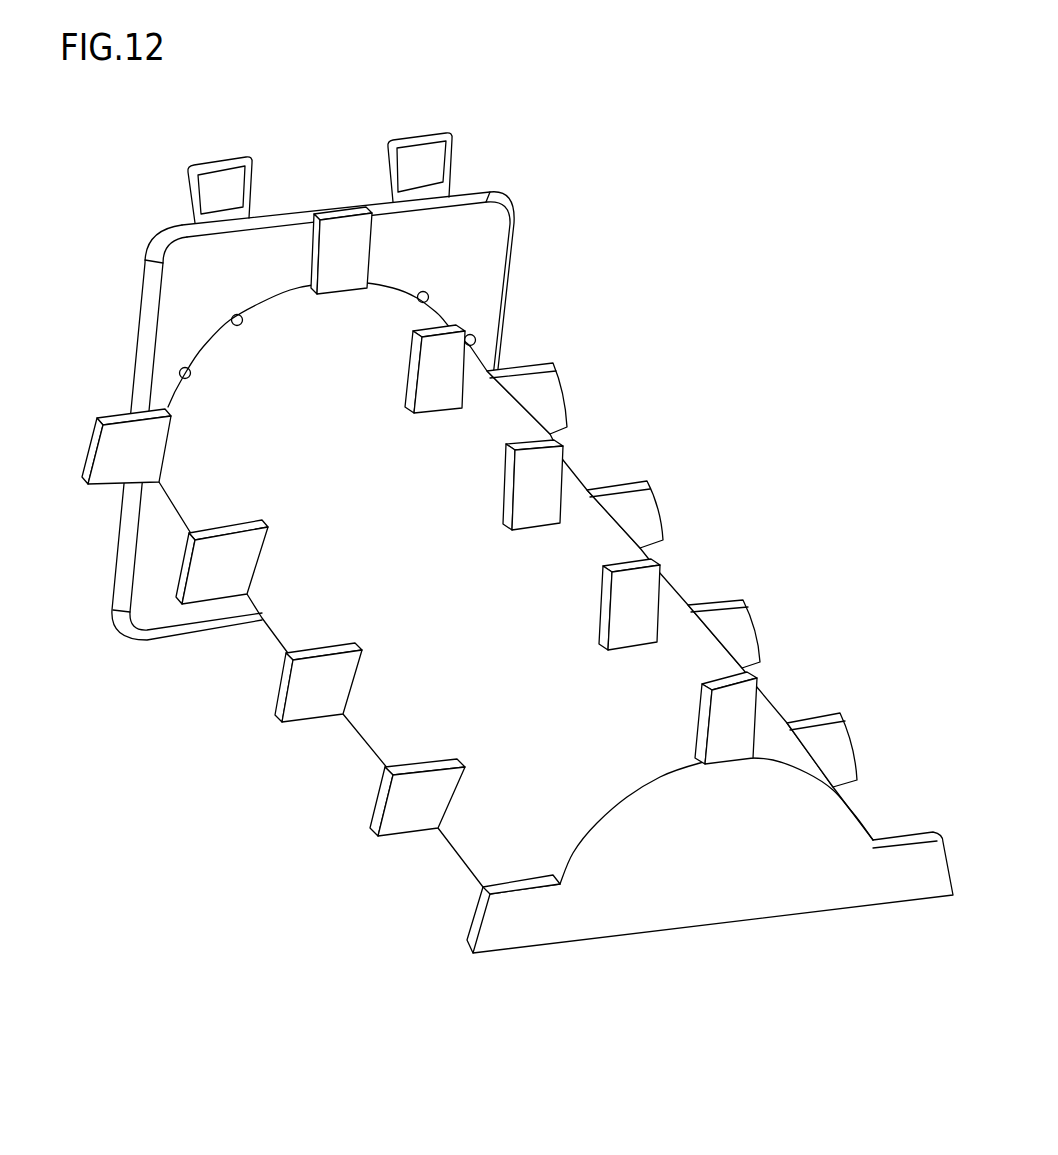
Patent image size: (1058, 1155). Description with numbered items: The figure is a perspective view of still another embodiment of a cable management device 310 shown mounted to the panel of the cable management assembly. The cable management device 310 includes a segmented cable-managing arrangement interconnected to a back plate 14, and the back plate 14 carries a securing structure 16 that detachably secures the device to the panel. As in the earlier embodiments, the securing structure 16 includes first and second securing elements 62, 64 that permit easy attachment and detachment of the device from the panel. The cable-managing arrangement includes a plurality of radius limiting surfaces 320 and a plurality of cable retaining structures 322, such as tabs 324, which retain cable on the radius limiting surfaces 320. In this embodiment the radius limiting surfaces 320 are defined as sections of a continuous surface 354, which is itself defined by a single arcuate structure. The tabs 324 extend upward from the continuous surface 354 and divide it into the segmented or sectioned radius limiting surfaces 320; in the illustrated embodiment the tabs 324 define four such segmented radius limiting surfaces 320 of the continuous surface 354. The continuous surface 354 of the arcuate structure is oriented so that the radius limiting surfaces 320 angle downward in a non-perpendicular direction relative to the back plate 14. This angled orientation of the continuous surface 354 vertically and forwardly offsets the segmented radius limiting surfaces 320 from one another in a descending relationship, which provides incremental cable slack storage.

The back plate 14 is at (345, 326).
The securing structure 16 is at (328, 117).
The first securing element 62 is at (222, 157).
The second securing element 64 is at (428, 133).
The cable management device 310 is at (501, 482).
The radius limiting surfaces 320 is at (203, 473).
The cable retaining structures 322 is at (592, 436).
The tabs 324 is at (650, 580).
The continuous surface 354 is at (457, 463).